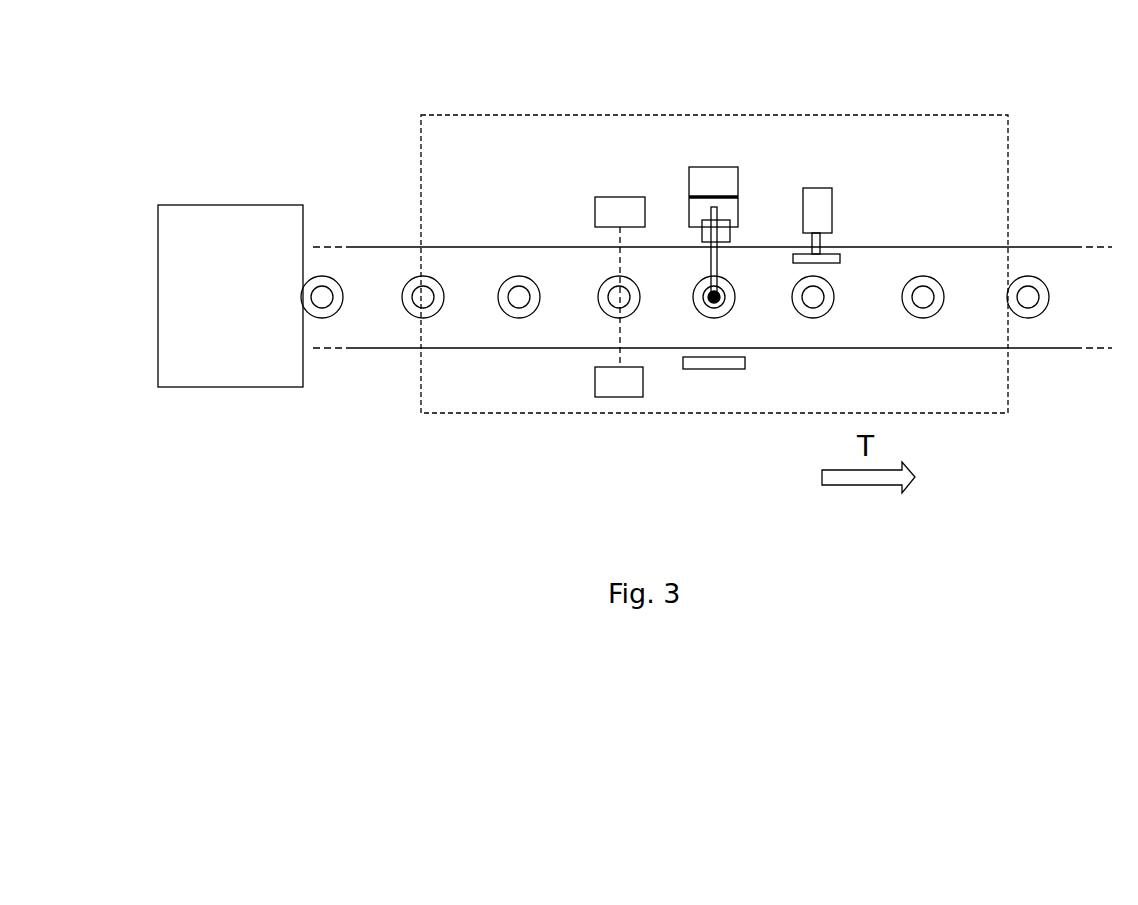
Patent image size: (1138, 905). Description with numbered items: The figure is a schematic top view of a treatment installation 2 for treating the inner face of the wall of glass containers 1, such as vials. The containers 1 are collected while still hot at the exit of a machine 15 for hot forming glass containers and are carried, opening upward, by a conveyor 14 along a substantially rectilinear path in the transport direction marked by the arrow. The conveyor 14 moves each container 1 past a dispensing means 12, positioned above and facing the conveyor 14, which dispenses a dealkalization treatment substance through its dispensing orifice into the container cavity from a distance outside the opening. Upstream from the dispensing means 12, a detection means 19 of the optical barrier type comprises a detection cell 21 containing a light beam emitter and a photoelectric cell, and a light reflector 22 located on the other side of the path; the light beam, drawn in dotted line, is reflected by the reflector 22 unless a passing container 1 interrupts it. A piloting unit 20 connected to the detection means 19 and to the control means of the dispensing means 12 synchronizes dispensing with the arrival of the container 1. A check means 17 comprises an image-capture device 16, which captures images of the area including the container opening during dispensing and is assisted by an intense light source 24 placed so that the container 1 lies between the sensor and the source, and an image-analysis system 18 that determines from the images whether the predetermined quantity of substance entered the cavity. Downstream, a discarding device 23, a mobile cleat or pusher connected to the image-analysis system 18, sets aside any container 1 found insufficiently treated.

The glass container 1 is at (325, 273).
The treatment installation 2 is at (447, 111).
The dispensing means 12 is at (790, 165).
The conveyor 14 is at (660, 336).
The machine for hot forming a glass container 15 is at (250, 312).
The image-capture device 16 is at (727, 265).
The check means 17 is at (702, 193).
The image-analysis system 18 is at (713, 194).
The detection means 19 is at (628, 195).
The piloting unit 20 is at (683, 184).
The detection cell 21 is at (578, 210).
The light reflector 22 is at (621, 380).
The discarding device 23 is at (838, 212).
The light source 24 is at (715, 369).